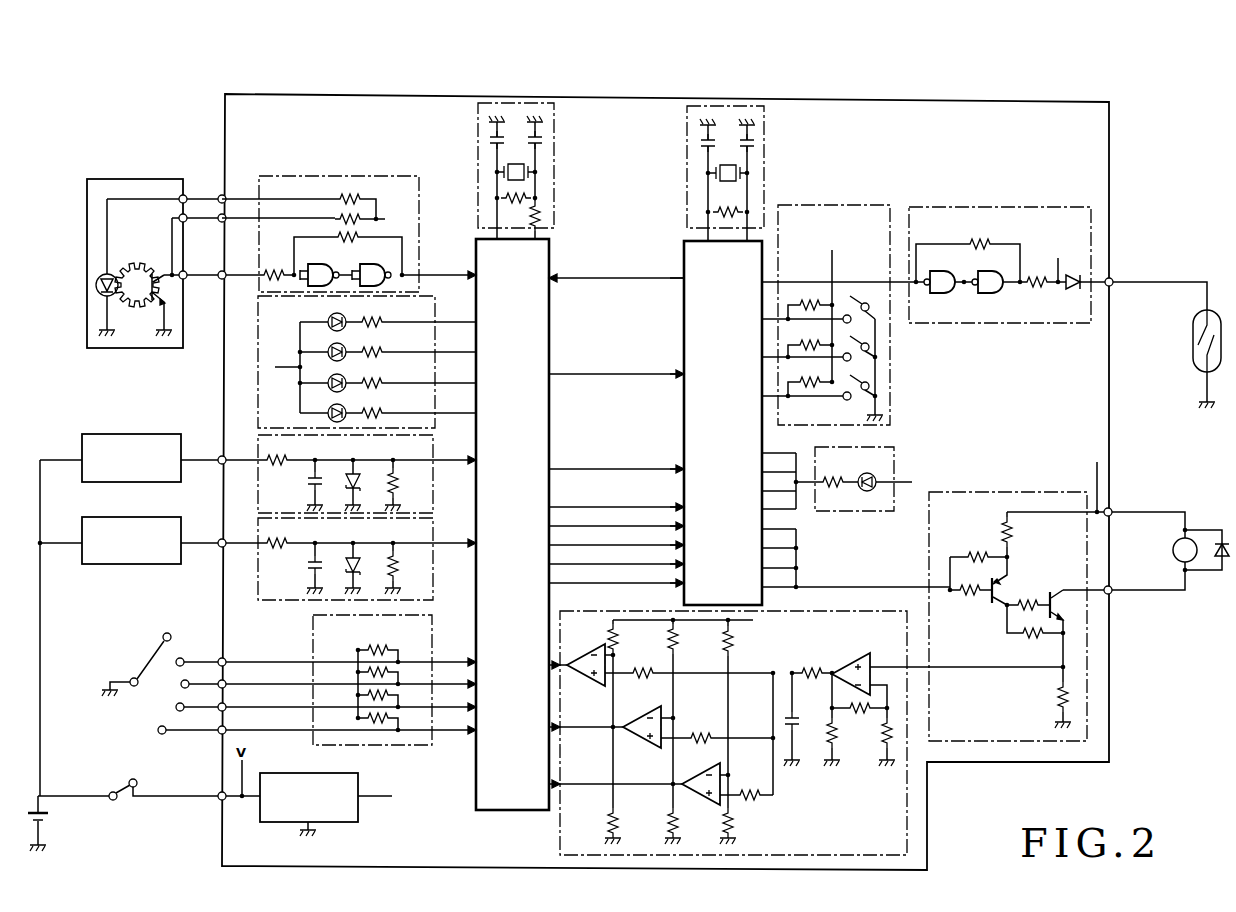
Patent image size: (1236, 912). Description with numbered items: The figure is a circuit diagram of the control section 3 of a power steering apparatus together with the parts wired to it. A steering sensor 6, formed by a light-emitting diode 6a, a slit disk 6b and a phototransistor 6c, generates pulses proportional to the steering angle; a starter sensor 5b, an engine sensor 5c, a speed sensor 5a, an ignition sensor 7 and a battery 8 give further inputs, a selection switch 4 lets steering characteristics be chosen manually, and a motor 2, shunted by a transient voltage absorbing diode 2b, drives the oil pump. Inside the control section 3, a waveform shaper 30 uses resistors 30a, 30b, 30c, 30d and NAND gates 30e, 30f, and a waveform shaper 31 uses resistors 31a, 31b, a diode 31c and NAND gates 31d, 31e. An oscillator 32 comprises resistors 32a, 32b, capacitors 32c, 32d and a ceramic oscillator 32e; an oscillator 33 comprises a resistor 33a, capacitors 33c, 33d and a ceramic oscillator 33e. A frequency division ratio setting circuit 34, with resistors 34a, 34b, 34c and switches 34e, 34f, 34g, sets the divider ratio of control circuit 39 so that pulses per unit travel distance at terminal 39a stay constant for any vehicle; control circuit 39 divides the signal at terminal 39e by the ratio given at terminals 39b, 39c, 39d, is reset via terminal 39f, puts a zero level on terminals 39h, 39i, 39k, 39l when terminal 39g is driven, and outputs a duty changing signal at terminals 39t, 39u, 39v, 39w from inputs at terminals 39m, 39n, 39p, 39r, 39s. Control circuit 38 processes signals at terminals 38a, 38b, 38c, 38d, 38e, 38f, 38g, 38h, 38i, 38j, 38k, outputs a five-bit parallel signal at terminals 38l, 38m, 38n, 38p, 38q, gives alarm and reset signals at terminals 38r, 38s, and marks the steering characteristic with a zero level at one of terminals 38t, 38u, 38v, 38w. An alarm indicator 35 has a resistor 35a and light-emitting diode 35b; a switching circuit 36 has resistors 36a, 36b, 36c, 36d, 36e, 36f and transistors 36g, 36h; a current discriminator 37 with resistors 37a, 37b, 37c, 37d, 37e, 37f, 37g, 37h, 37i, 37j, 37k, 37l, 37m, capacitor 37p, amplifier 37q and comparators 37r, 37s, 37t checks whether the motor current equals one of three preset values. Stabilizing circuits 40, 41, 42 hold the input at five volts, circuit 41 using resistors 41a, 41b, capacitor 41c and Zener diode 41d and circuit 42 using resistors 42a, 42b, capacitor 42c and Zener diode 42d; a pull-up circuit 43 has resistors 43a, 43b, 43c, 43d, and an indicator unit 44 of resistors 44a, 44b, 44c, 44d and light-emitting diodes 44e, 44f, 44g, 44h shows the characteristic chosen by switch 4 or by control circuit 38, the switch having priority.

The motor 2 is at (1172, 550).
The diode 2b is at (1218, 536).
The control section 3 is at (1109, 146).
The selection switch 4 is at (144, 660).
The speed sensor 5a is at (1192, 339).
The starter sensor 5b is at (156, 434).
The engine sensor 5c is at (140, 517).
The steering sensor 6 is at (163, 179).
The light-emitting diode 6a is at (109, 272).
The slit disk 6b is at (137, 264).
The phototransistor 6c is at (155, 270).
The ignition sensor 7 is at (122, 779).
The battery 8 is at (51, 817).
The waveform shaper 30 is at (388, 176).
The resistor 30a is at (356, 192).
The resistor 30b is at (334, 217).
The resistor 30c is at (342, 242).
The resistor 30d is at (276, 271).
The NAND gate 30e is at (332, 263).
The NAND gate 30f is at (377, 266).
The waveform shaper 31 is at (1048, 205).
The resistor 31a is at (975, 240).
The resistor 31b is at (1039, 274).
The diode 31c is at (1076, 296).
The NAND gate 31d is at (947, 296).
The NAND gate 31e is at (986, 270).
The oscillator 32 is at (571, 136).
The resistor 32a is at (533, 197).
The resistor 32b is at (545, 215).
The capacitor 32c is at (490, 142).
The capacitor 32d is at (545, 142).
The ceramic oscillator 32e is at (514, 162).
The oscillator 33 is at (783, 134).
The resistor 33a is at (740, 208).
The capacitor 33c is at (700, 144).
The capacitor 33d is at (757, 144).
The ceramic oscillator 33e is at (726, 164).
The frequency division ratio setting circuit 34 is at (860, 205).
The resistor 34a is at (814, 303).
The resistor 34b is at (814, 343).
The resistor 34c is at (814, 380).
The switch 34e is at (855, 295).
The switch 34f is at (870, 345).
The switch 34g is at (862, 402).
The alarm indicator 35 is at (896, 445).
The resistor 35a is at (835, 479).
The light-emitting diode 35b is at (863, 490).
The switching circuit 36 is at (1028, 492).
The resistor 36a is at (977, 552).
The resistor 36b is at (977, 595).
The resistor 36c is at (1014, 530).
The resistor 36d is at (1052, 597).
The resistor 36e is at (1024, 640).
The resistor 36f is at (1055, 700).
The transistor 36g is at (1004, 586).
The transistor 36h is at (1041, 612).
The current discriminator 37 is at (872, 611).
The resistor 37a is at (609, 636).
The resistor 37b is at (680, 644).
The resistor 37c is at (736, 651).
The resistor 37d is at (645, 664).
The resistor 37e is at (713, 728).
The resistor 37f is at (608, 818).
The resistor 37g is at (667, 820).
The resistor 37h is at (734, 824).
The resistor 37i is at (750, 790).
The resistor 37j is at (812, 663).
The resistor 37k is at (826, 720).
The resistor 37l is at (858, 714).
The resistor 37m is at (882, 748).
The capacitor 37p is at (798, 732).
The amplifier 37q is at (858, 654).
The comparator 37r is at (580, 685).
The comparator 37s is at (640, 750).
The comparator 37t is at (696, 806).
The control circuit 38 is at (549, 241).
The terminal 38a is at (440, 267).
The terminal 38b is at (616, 270).
The terminal 38c is at (465, 452).
The terminal 38d is at (465, 536).
The terminal 38e is at (326, 657).
The terminal 38f is at (328, 678).
The terminal 38g is at (326, 701).
The terminal 38h is at (317, 724).
The terminal 38i is at (601, 784).
The terminal 38j is at (572, 727).
The terminal 38k is at (544, 662).
The terminal 38l is at (604, 582).
The terminal 38m is at (601, 563).
The terminal 38n is at (602, 544).
The terminal 38p is at (602, 525).
The terminal 38q is at (602, 506).
The terminal 38r is at (616, 461).
The terminal 38s is at (616, 366).
The terminal 38t is at (431, 314).
The terminal 38u is at (433, 344).
The terminal 38v is at (433, 375).
The terminal 38w is at (434, 405).
The control circuit 39 is at (684, 248).
The terminal 39a is at (662, 268).
The terminal 39b is at (788, 387).
The terminal 39c is at (788, 348).
The terminal 39d is at (788, 310).
The terminal 39e is at (824, 273).
The terminal 39f is at (664, 364).
The terminal 39g is at (664, 459).
The terminal 39h is at (779, 445).
The terminal 39i is at (779, 481).
The terminal 39k is at (788, 483).
The terminal 39l is at (779, 501).
The terminal 39m is at (695, 508).
The terminal 39n is at (692, 527).
The terminal 39p is at (692, 546).
The terminal 39r is at (691, 565).
The terminal 39s is at (692, 584).
The terminal 39t is at (766, 554).
The terminal 39u is at (767, 547).
The terminal 39v is at (767, 566).
The terminal 39w is at (841, 587).
The stabilizing circuit 40 is at (358, 771).
The stabilizing circuit 41 is at (257, 449).
The resistor 41a is at (298, 455).
The resistor 41b is at (398, 490).
The capacitor 41c is at (308, 485).
The Zener diode 41d is at (359, 485).
The stabilizing circuit 42 is at (257, 532).
The resistor 42a is at (298, 538).
The resistor 42b is at (398, 575).
The capacitor 42c is at (306, 568).
The Zener diode 42d is at (351, 567).
The pull-up circuit 43 is at (311, 628).
The resistor 43a is at (388, 644).
The resistor 43b is at (387, 670).
The resistor 43c is at (387, 693).
The resistor 43d is at (387, 716).
The indicator unit 44 is at (435, 310).
The resistor 44a is at (374, 320).
The resistor 44b is at (374, 350).
The resistor 44c is at (374, 380).
The resistor 44d is at (374, 410).
The light-emitting diode 44e is at (326, 317).
The light-emitting diode 44f is at (333, 348).
The light-emitting diode 44g is at (333, 379).
The light-emitting diode 44h is at (333, 408).